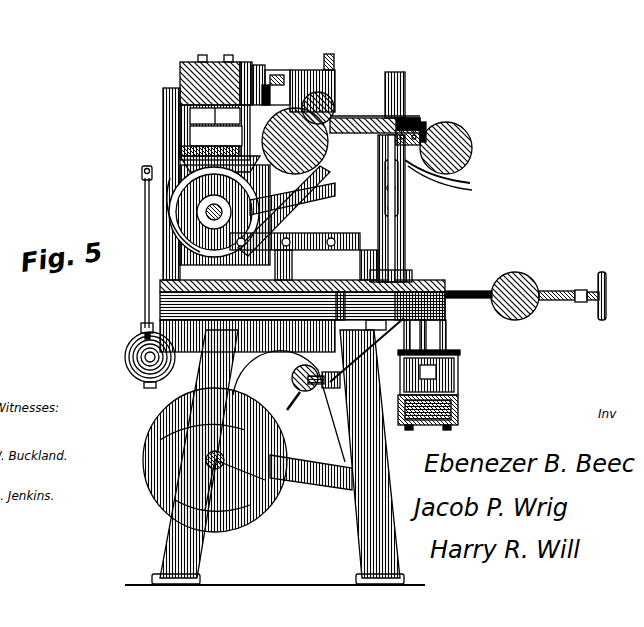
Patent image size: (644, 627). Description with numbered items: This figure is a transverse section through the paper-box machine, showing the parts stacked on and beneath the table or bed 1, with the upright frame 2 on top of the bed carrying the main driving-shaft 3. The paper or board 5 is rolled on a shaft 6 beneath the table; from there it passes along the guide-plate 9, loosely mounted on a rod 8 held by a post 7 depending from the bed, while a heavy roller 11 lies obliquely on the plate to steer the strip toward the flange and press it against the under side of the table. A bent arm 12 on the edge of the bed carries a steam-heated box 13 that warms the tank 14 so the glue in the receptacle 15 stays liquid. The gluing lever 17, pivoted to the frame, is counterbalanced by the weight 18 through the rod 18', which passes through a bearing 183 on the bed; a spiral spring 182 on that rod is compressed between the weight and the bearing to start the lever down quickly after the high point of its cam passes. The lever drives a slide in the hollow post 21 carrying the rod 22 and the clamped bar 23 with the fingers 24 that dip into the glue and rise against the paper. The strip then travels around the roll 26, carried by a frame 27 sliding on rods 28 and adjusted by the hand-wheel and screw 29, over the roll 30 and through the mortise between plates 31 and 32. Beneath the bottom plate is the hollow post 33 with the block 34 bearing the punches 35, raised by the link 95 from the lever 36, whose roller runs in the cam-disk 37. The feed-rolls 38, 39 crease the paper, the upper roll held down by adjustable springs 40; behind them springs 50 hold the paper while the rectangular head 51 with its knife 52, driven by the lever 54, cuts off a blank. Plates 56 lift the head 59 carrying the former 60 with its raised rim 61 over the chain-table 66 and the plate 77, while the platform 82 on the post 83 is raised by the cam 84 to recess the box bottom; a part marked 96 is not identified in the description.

The table or bed 1 is at (160, 288).
The upright frame 2 is at (185, 160).
The main driving-shaft 3 is at (206, 212).
The paper or board 5 is at (275, 456).
The shaft 6 is at (255, 488).
The post 7 is at (335, 336).
The rod 8 is at (340, 380).
The guide-plate 9 is at (350, 374).
The roller 11 is at (292, 376).
The bent arm 12 is at (430, 430).
The box 13 is at (458, 406).
The tank 14 is at (458, 370).
The receptacle 15 is at (428, 350).
The lever 17 is at (387, 188).
The counterbalancing-weight 18 is at (133, 360).
The rod 18' is at (105, 247).
The spiral spring 182 is at (145, 336).
The bearing 183 is at (141, 320).
The hollow post 21 is at (405, 230).
The rod 22 is at (444, 326).
The bar 23 is at (400, 395).
The fingers 24 is at (460, 356).
The roll 26 is at (528, 282).
The frame 27 is at (547, 302).
The rods 28 is at (468, 292).
The hand-wheel and screw 29 is at (611, 296).
The roll 30 is at (472, 142).
The plate 31 is at (410, 118).
The bottom plate 32 is at (420, 132).
The hollow post 33 is at (465, 183).
The block 34 is at (450, 179).
The punches 35 is at (426, 134).
The lever 36 is at (325, 208).
The cam-disk 37 is at (262, 210).
The feed-roll 38 is at (352, 114).
The feed-roll 39 is at (356, 118).
The adjustable springs 40 is at (312, 100).
The springs 50 is at (302, 80).
The rectangular head 51 is at (268, 88).
The cutter-blade or knife 52 is at (273, 76).
The lever 54 is at (305, 250).
The plates 56 is at (183, 70).
The head 59 is at (244, 66).
The former 60 is at (256, 72).
The raised rim 61 is at (295, 141).
The chain-table or runway 66 is at (180, 132).
The plate 77 is at (163, 116).
The plate or platform 82 is at (180, 148).
The post 83 is at (206, 178).
The cam 84 is at (188, 190).
The link 95 is at (385, 196).
The block 96 is at (216, 136).